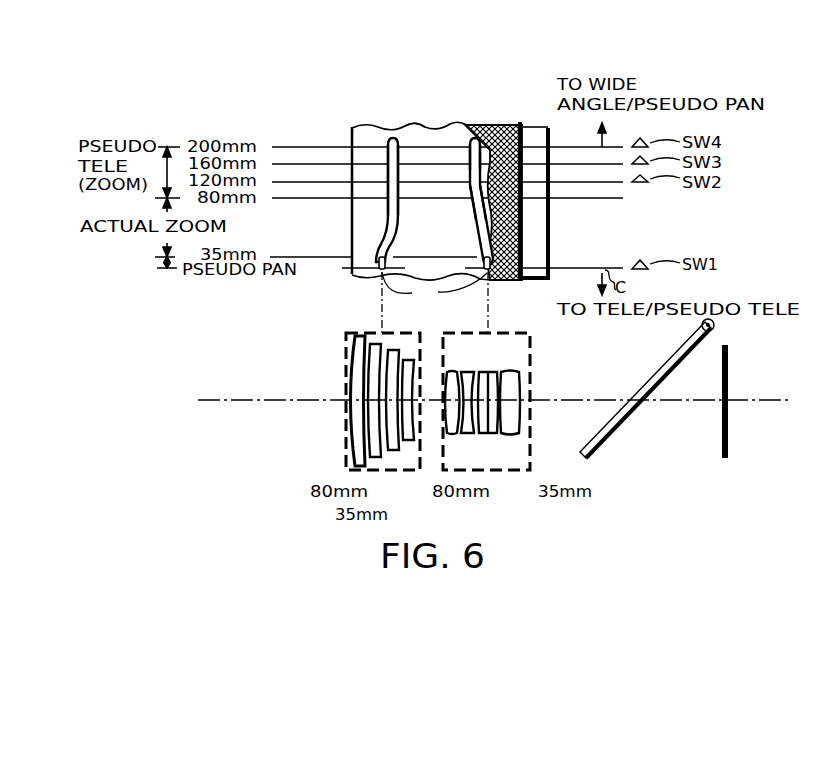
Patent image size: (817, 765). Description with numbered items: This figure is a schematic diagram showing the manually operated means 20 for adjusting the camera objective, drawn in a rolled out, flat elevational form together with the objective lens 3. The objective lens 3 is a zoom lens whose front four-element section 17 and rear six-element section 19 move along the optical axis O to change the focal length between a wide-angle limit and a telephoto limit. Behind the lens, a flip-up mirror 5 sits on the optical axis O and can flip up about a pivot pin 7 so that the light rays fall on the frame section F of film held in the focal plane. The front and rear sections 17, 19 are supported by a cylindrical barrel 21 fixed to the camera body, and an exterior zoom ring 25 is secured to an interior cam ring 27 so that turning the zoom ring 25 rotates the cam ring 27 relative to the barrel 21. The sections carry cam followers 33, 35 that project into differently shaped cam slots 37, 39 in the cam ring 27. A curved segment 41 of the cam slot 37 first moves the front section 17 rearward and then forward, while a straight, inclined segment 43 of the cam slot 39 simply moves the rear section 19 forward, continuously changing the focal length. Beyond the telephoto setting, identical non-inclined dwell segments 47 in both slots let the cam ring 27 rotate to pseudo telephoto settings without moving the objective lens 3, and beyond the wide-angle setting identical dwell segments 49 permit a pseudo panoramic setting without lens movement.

The manually operated means 20 is at (352, 135).
The cam ring 27 is at (420, 127).
The zoom ring 25 is at (498, 124).
The cylindrical barrel 21 is at (535, 135).
The dwell segments 47 is at (468, 155).
The cam slot 39 is at (477, 191).
The cam slot 37 is at (394, 193).
The curved segment 41 is at (393, 220).
The straight, inclined segment 43 is at (477, 224).
The cam follower 33 is at (380, 257).
The cam follower 35 is at (485, 257).
The dwell segments 49 is at (434, 286).
The objective lens 3 is at (347, 356).
The front four-element section 17 is at (350, 465).
The rear six-element section 19 is at (535, 448).
The flip-up mirror 5 is at (628, 422).
The pivot pin 7 is at (722, 327).
The frame section of film F is at (722, 388).
The optical axis O is at (212, 400).